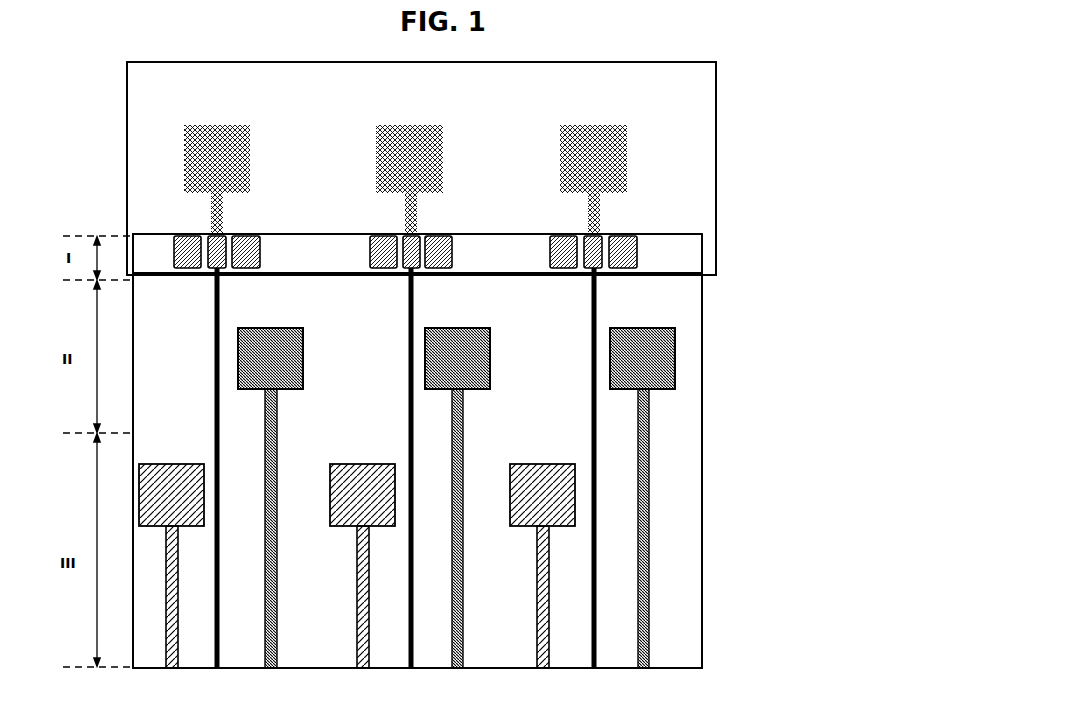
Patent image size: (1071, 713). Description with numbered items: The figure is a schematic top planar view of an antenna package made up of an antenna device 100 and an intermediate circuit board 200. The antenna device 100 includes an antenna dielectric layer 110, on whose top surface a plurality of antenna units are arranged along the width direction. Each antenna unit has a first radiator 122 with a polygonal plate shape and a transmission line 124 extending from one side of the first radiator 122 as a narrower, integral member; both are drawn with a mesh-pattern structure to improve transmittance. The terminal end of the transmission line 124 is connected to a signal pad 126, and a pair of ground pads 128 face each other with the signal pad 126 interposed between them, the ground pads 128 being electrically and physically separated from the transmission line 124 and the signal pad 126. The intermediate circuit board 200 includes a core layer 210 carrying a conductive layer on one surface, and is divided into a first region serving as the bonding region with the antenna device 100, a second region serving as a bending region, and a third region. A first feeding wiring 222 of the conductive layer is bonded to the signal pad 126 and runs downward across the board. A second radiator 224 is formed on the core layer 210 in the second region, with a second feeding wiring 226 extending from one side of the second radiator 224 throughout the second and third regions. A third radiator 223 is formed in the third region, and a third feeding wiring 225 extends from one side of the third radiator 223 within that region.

The antenna device 100 is at (716, 108).
The antenna dielectric layer 110 is at (700, 197).
The first radiator 122 is at (627, 163).
The transmission line 124 is at (598, 211).
The signal pad 126 is at (602, 268).
The ground pad 128 is at (637, 250).
The intermediate circuit board 200 is at (704, 483).
The core layer 210 is at (682, 636).
The first feeding wiring 222 is at (597, 424).
The third radiator 223 is at (577, 527).
The second radiator 224 is at (675, 350).
The third feeding wiring 225 is at (549, 584).
The second feeding wiring 226 is at (649, 444).